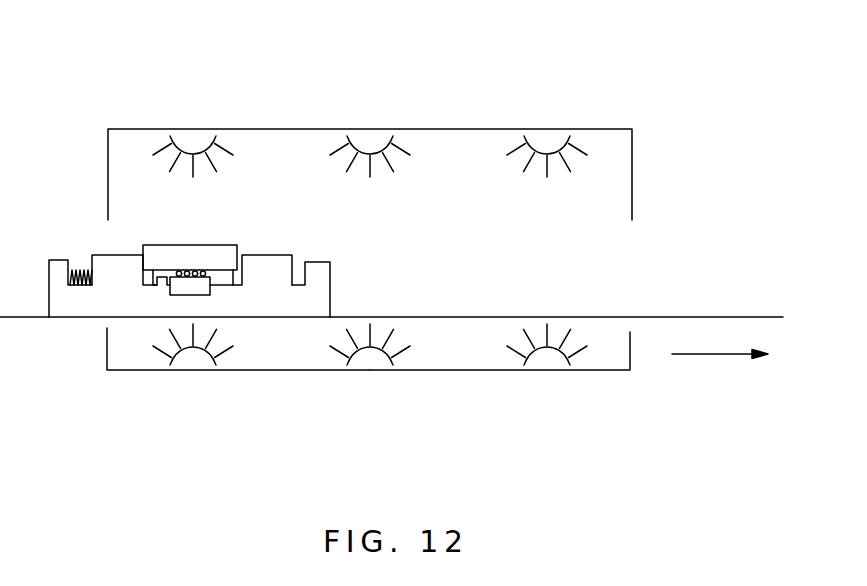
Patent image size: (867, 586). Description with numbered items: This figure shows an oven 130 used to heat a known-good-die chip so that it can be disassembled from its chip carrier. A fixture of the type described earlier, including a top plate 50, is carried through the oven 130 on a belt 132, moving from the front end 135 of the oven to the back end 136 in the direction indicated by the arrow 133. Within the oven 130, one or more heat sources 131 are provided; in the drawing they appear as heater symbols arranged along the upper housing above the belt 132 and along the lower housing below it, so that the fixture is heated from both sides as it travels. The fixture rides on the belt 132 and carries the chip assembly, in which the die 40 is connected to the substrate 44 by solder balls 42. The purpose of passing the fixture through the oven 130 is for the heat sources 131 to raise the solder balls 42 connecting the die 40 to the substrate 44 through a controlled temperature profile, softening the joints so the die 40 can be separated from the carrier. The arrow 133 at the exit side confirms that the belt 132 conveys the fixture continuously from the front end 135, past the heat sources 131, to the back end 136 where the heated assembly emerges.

The die 40 is at (183, 278).
The solder balls 42 is at (207, 270).
The substrate 44 is at (160, 247).
The top plate 50 is at (110, 263).
The oven 130 is at (450, 130).
The heat source 131 is at (197, 358).
The belt 132 is at (662, 320).
The arrow 133 is at (740, 355).
The front end 135 is at (110, 340).
The back end 136 is at (630, 352).